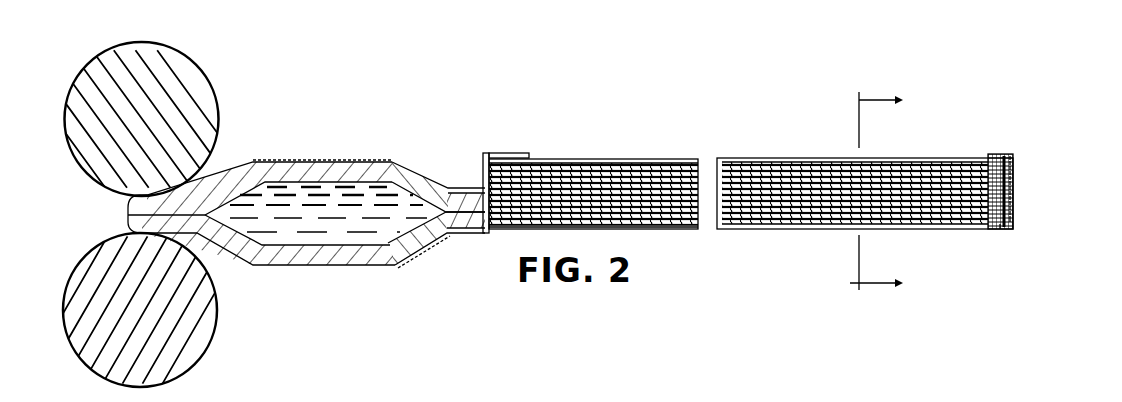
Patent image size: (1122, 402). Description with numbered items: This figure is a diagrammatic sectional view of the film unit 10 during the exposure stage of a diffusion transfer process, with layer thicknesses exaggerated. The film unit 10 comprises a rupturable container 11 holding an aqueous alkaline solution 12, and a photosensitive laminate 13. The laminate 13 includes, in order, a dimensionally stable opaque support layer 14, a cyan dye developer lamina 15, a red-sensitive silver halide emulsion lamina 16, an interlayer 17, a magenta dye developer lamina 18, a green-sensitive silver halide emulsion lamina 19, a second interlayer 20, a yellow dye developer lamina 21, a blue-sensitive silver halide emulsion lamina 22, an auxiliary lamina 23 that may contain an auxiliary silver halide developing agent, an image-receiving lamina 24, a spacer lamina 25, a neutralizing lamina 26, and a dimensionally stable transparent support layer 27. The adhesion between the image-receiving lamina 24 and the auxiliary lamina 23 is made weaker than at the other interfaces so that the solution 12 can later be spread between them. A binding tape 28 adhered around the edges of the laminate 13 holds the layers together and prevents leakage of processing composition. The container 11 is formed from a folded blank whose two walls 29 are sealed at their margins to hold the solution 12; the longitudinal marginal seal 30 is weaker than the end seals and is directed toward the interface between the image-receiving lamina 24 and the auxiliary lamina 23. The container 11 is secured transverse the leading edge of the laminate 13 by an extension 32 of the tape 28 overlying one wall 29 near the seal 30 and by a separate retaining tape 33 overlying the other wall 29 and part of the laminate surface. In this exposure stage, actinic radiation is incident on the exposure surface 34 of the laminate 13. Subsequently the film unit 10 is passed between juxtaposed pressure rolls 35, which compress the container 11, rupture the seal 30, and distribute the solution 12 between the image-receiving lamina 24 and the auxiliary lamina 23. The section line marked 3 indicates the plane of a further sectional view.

The film unit 10 is at (488, 126).
The rupturable container 11 is at (267, 162).
The aqueous alkaline solution 12 is at (321, 187).
The photosensitive laminate 13 is at (583, 152).
The opaque support layer 14 is at (1015, 158).
The cyan dye developer lamina 15 is at (1015, 162).
The red-sensitive silver halide emulsion lamina 16 is at (1015, 167).
The interlayer 17 is at (1015, 170).
The magenta dye developer lamina 18 is at (1015, 175).
The green-sensitive silver halide emulsion lamina 19 is at (1015, 182).
The interlayer 20 is at (1015, 187).
The yellow dye developer lamina 21 is at (1015, 192).
The blue-sensitive silver halide emulsion lamina 22 is at (1015, 197).
The auxiliary lamina 23 is at (1015, 202).
The image-receiving lamina 24 is at (1015, 207).
The spacer lamina 25 is at (1015, 210).
The neutralizing lamina 26 is at (1015, 215).
The transparent support layer 27 is at (1005, 226).
The tape 28 is at (503, 233).
The walls 29 is at (282, 170).
The longitudinal marginal seal 30 is at (460, 215).
The extension of tape 32 is at (431, 240).
The retaining tape 33 is at (402, 173).
The exposure surface 34 is at (652, 232).
The pressure rolls 35 is at (200, 70).
The section line 3- 3 is at (884, 191).